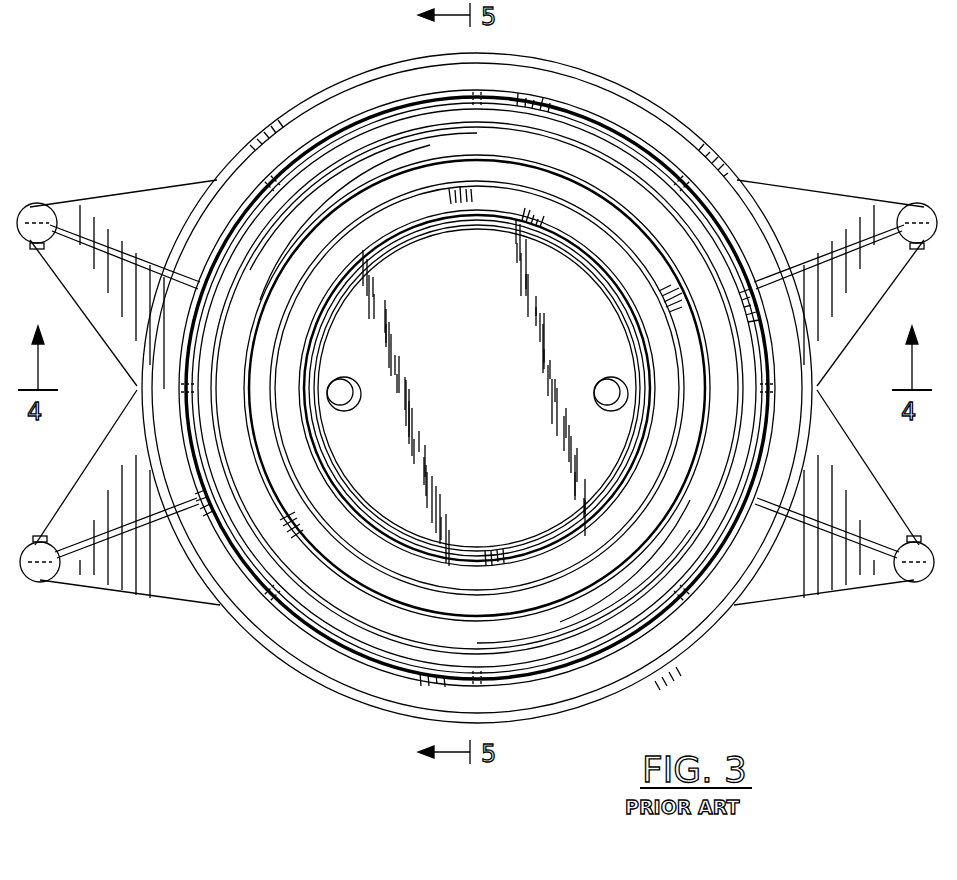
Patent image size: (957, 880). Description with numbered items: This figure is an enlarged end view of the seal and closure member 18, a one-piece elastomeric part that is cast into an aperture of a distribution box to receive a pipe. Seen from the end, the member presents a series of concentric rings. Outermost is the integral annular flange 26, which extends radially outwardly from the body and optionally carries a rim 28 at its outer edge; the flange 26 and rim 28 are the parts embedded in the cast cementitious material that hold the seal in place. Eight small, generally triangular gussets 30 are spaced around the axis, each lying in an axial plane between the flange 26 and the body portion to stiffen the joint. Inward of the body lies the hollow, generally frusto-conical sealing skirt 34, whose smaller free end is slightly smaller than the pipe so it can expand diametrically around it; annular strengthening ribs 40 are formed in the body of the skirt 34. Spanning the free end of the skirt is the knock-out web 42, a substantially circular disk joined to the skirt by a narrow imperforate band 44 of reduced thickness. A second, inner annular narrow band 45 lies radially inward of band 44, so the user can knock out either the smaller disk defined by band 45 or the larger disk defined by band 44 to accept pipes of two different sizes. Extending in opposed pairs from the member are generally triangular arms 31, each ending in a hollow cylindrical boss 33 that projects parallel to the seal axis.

The seal and closure member 18 is at (710, 130).
The annular flange 26 is at (598, 92).
The rim 28 is at (298, 108).
The gussets 30 is at (472, 105).
The arms 31 is at (148, 200).
The hollow cylindrical bosses 33 is at (36, 203).
The sealing skirt 34 is at (357, 610).
The annular strengthening ribs 40 is at (268, 287).
The knock-out web 42 is at (510, 345).
The weakened annular portion (narrow band) 44 is at (355, 550).
The inner annular narrow band 45 is at (474, 555).